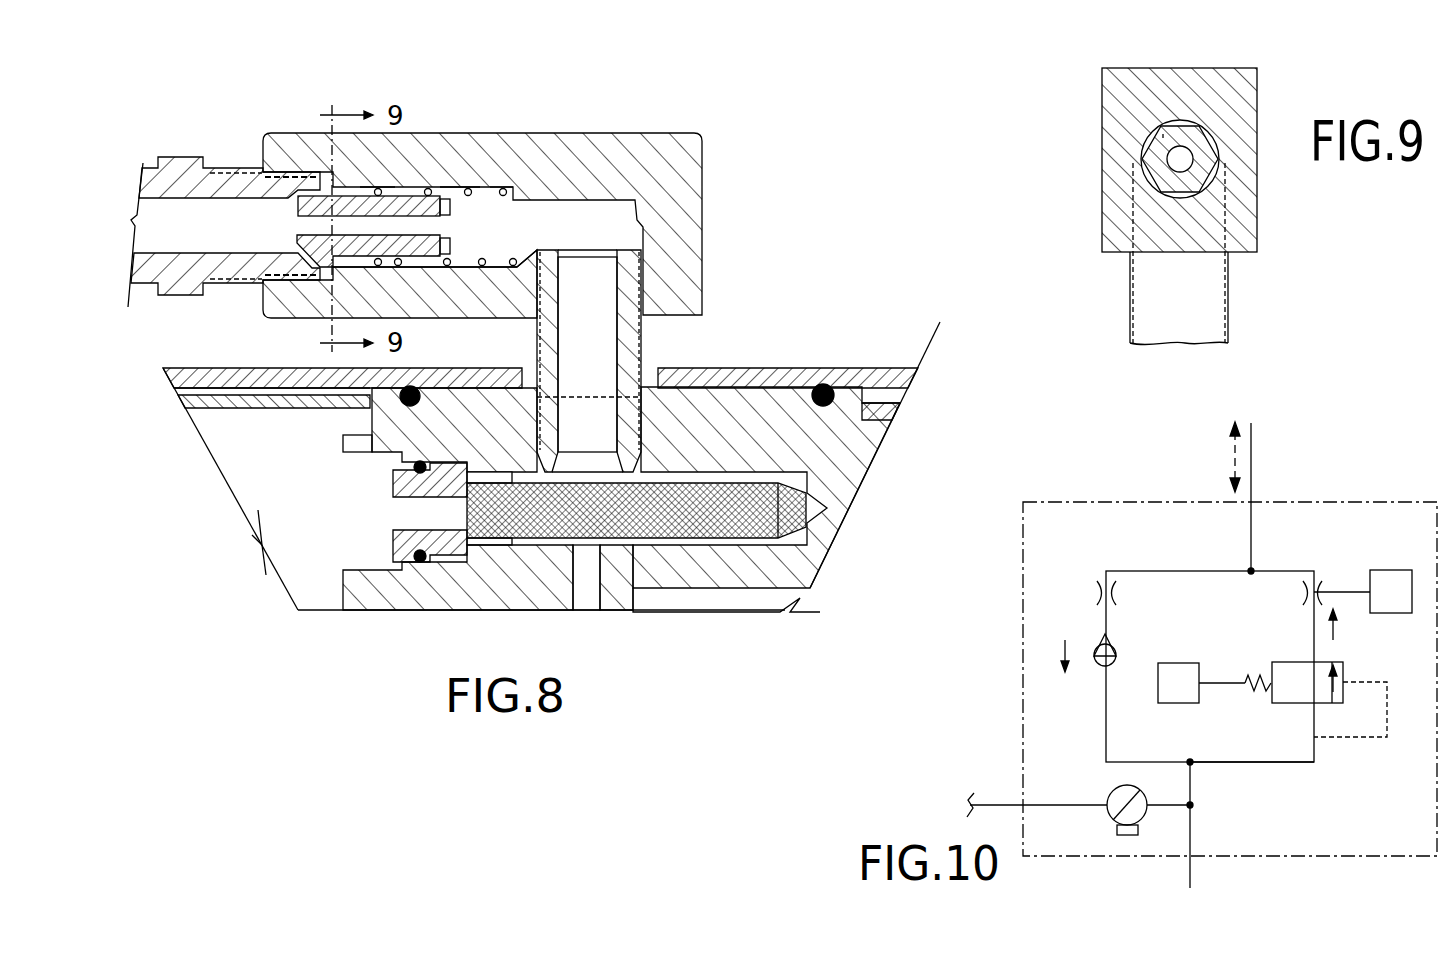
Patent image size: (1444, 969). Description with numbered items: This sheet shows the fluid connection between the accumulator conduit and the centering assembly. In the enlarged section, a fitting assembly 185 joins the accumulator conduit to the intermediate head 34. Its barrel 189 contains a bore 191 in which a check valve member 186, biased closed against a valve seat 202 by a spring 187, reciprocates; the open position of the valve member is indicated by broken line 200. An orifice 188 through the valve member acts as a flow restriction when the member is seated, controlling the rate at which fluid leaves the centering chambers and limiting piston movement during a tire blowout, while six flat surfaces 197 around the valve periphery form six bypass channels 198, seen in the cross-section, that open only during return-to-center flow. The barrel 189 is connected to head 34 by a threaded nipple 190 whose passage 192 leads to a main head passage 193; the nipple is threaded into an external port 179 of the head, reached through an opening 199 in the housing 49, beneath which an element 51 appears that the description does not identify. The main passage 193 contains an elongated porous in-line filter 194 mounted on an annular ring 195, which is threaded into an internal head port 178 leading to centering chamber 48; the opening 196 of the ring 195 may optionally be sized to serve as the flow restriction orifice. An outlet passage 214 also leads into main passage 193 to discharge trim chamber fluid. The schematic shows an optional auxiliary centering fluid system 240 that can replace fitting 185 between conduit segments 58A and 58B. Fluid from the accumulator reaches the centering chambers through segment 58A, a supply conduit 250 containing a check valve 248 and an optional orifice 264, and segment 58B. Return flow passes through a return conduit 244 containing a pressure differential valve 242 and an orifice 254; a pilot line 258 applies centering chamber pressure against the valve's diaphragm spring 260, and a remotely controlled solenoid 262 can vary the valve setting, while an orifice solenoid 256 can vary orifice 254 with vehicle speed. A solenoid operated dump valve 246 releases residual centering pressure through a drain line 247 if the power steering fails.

In FIG. 8, the intermediate head 34 is at (853, 467).
In FIG. 8, the centering chamber 48 is at (238, 464).
In FIG. 8, the housing 49 is at (255, 368).
In FIG. 8, the lower plate 51 is at (307, 409).
In FIG. 8, the internal head port 178 is at (368, 458).
In FIG. 8, the external port 179 is at (617, 420).
In FIG. 8, the fitting assembly 185 is at (718, 104).
In FIG. 9, the fitting assembly 185 is at (1288, 209).
In FIG. 8, the check valve member 186 is at (430, 188).
In FIG. 9, the check valve member 186 is at (1162, 137).
In FIG. 8, the spring 187 is at (500, 186).
In FIG. 8, the orifice 188 is at (422, 222).
In FIG. 9, the orifice 188 is at (1167, 150).
In FIG. 8, the barrel 189 is at (703, 175).
In FIG. 8, the threaded nipple 190 is at (645, 333).
In FIG. 9, the threaded nipple 190 is at (1229, 285).
In FIG. 8, the bore 191 is at (432, 270).
In FIG. 8, the passage 192 is at (617, 348).
In FIG. 8, the main head passage 193 is at (532, 610).
In FIG. 8, the in-line filter 194 is at (697, 540).
In FIG. 8, the annular ring 195 is at (393, 542).
In FIG. 8, the opening 196 is at (410, 498).
In FIG. 9, the flat surfaces 197 is at (1163, 137).
In FIG. 8, the bypass channels 198 is at (378, 187).
In FIG. 9, the bypass channels 198 is at (1212, 112).
In FIG. 8, the opening 199 is at (532, 366).
In FIG. 8, the broken line 200 is at (455, 186).
In FIG. 8, the valve seat 202 is at (285, 194).
In FIG. 8, the outlet passage 214 is at (588, 604).
In FIG. 10, the auxiliary centering fluid system 240 is at (1114, 492).
In FIG. 10, the pressure differential valve 242 is at (1345, 668).
In FIG. 10, the return conduit 244 is at (1245, 764).
In FIG. 10, the solenoid operated dump valve 246 is at (1105, 818).
In FIG. 10, the drain line 247 is at (990, 802).
In FIG. 10, the check valve 248 is at (1100, 643).
In FIG. 10, the supply conduit 250 is at (1123, 570).
In FIG. 10, the orifice 254 is at (1300, 590).
In FIG. 10, the remotely controlled solenoid 256 is at (1383, 570).
In FIG. 10, the pilot line 258 is at (1387, 710).
In FIG. 10, the diaphragm spring 260 is at (1245, 680).
In FIG. 10, the remotely controlled solenoid 262 is at (1186, 704).
In FIG. 10, the orifice 264 is at (1113, 593).
In FIG. 10, the inlet/outlet conduit segment 58A is at (1255, 475).
In FIG. 10, the inlet/outlet conduit segment 58B is at (1192, 870).